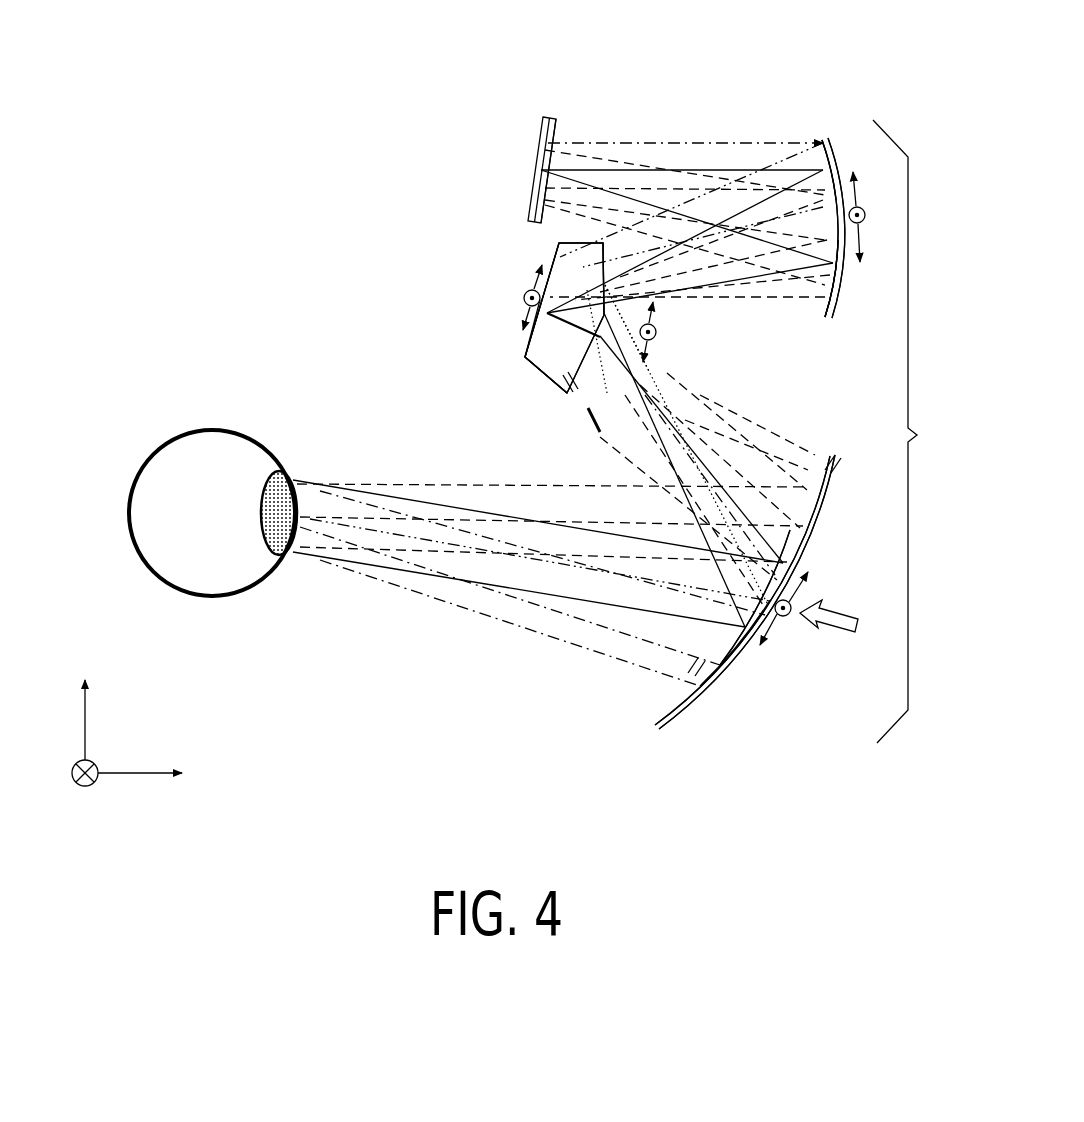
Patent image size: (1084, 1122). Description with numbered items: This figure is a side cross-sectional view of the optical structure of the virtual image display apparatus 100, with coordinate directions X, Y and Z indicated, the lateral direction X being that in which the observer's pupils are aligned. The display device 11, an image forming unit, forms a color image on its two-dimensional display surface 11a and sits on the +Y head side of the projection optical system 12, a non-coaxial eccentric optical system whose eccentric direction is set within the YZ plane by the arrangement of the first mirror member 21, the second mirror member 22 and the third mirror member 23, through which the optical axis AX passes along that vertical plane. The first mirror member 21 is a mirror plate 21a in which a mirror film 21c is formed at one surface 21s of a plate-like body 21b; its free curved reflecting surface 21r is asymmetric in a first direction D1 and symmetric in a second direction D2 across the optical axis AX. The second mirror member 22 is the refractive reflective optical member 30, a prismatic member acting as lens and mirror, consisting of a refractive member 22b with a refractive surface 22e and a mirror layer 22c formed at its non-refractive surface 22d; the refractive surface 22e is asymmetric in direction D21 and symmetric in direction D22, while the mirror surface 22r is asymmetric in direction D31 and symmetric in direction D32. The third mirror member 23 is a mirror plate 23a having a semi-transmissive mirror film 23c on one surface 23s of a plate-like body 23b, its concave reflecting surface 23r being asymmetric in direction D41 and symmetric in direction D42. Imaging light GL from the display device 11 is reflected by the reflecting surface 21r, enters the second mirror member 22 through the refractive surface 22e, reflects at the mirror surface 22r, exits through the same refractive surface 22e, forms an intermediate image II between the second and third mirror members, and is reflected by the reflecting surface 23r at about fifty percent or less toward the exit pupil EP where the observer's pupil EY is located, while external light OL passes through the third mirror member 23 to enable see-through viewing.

The display device / optical system 100 is at (412, 103).
The display device 11 is at (548, 116).
The display surface 11a is at (556, 143).
The projection optical system 12 is at (916, 431).
The first mirror member 21 is at (822, 138).
The mirror plate 21a is at (830, 228).
The plate-like body 21b is at (840, 163).
The mirror film 21c is at (818, 155).
The surface 21s is at (838, 277).
The reflecting surface 21r is at (831, 278).
The second mirror member 22 is at (690, 342).
The refractive reflective optical member 30 is at (564, 318).
The refractive member 22b is at (548, 370).
The mirror layer 22c is at (527, 330).
The non-refractive surface 22d is at (532, 343).
The refractive surface 22e is at (603, 262).
The mirror surface 22r is at (528, 353).
The third mirror member 23 is at (658, 725).
The mirror plate 23a is at (742, 590).
The plate-like body 23b is at (708, 680).
The mirror film 23c is at (707, 653).
The surface 23s is at (740, 645).
The reflecting surface 23r is at (755, 597).
The first direction D1 is at (858, 178).
The second direction D2 is at (862, 256).
The first direction D21 is at (658, 320).
The second direction D22 is at (656, 345).
The first direction D31 is at (540, 270).
The second direction D32 is at (520, 320).
The first direction D41 is at (807, 583).
The second direction D42 is at (787, 617).
The imaging light GL is at (683, 140).
The optical axis AX is at (733, 177).
The pupil EY is at (293, 500).
The exit pupil EP is at (307, 543).
The external light OL is at (837, 632).
The intermediate image II is at (616, 385).
The X direction X is at (71, 789).
The Y direction Y is at (64, 711).
The Z direction Z is at (144, 795).